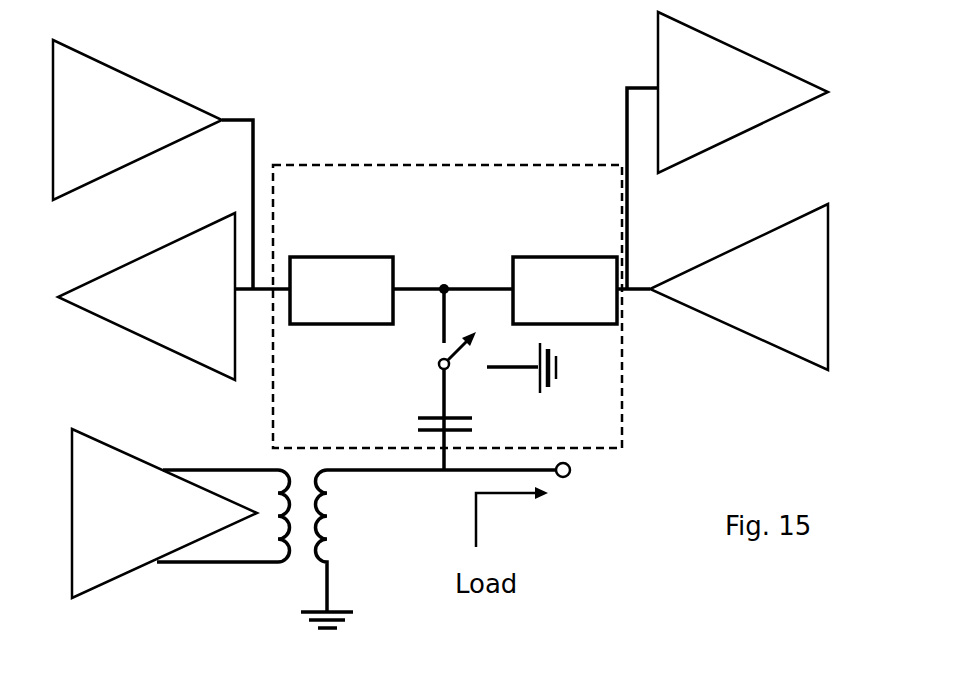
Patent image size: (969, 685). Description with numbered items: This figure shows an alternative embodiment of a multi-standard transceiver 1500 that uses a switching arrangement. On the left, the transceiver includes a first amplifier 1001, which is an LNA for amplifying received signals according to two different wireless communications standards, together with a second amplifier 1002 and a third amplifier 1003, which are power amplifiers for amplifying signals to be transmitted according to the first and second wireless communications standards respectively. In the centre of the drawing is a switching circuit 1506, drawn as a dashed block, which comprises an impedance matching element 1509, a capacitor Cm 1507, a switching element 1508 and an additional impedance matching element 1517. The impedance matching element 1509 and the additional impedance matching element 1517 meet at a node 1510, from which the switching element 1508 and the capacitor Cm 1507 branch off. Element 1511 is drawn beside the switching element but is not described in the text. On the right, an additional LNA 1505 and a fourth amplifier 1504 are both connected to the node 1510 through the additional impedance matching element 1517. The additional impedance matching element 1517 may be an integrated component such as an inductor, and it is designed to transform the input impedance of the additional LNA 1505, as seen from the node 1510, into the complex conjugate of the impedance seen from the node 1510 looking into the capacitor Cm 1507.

The multi-standard transceiver 1500 is at (364, 70).
The first amplifier 1001 is at (123, 307).
The second amplifier 1002 is at (105, 564).
The third amplifier 1003 is at (130, 90).
The fourth amplifier 1504 is at (726, 277).
The additional LNA 1505 is at (657, 38).
The switching circuit 1506 is at (452, 165).
The capacitor Cm 1507 is at (430, 403).
The switching element 1508 is at (438, 354).
The impedance matching element 1509 is at (341, 290).
The node 1510 is at (447, 285).
The voltage source 1511 is at (558, 366).
The additional impedance matching element 1517 is at (565, 290).